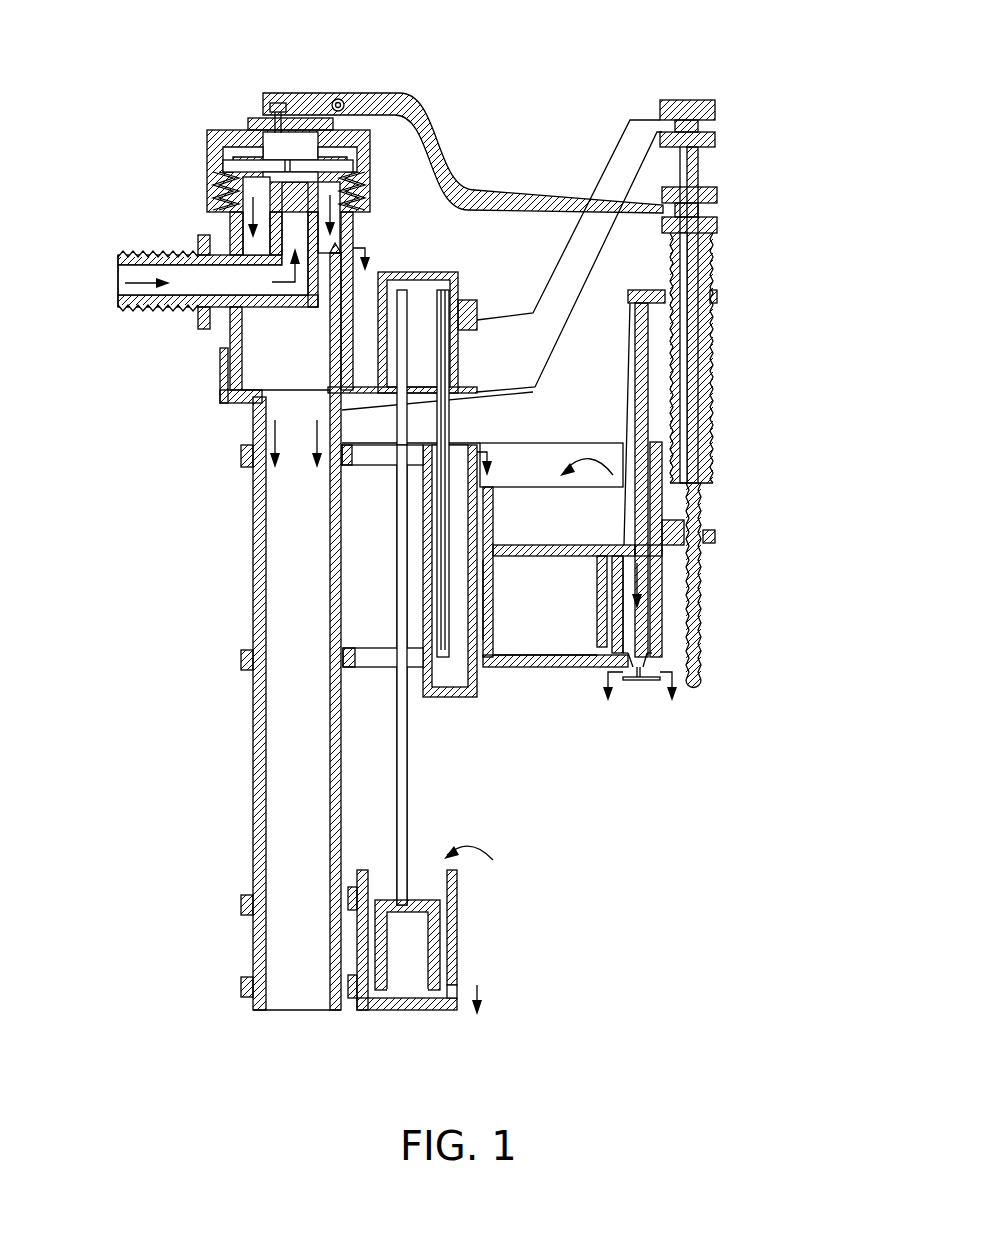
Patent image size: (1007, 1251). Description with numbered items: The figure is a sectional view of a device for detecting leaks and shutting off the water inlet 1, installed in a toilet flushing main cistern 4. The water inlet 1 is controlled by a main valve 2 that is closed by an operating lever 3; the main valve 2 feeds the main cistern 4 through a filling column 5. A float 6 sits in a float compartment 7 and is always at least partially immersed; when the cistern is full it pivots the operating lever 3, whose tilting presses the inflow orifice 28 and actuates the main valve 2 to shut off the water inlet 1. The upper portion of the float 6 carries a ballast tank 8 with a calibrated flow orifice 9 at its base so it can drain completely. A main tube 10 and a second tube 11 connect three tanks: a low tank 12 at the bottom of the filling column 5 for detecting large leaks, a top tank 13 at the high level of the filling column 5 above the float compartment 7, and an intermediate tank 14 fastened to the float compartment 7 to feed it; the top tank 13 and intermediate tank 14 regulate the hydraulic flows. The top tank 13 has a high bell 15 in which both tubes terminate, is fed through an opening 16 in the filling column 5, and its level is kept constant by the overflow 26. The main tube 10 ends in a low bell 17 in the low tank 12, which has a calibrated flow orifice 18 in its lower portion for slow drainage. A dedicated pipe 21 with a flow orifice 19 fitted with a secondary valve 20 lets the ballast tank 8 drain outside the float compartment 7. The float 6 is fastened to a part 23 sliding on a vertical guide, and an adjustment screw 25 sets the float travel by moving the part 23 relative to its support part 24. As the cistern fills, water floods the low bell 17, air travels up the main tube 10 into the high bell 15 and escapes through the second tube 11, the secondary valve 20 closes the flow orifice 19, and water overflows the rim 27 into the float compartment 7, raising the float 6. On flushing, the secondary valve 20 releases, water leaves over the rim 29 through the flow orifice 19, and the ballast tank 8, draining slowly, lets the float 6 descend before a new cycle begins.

The water inlet 1 is at (116, 298).
The main valve 2 is at (225, 165).
The operating lever 3 is at (410, 105).
The flushing main cistern 4 is at (180, 715).
The filling column 5 is at (258, 578).
The float 6 is at (567, 630).
The float compartment 7 is at (548, 662).
The ballast tank 8 is at (592, 518).
The calibrated flow orifice 9 is at (640, 548).
The main tube 10 is at (405, 790).
The second tube 11 is at (445, 657).
The low tank 12 is at (455, 890).
The top tank 13 is at (477, 310).
The intermediate tank 14 is at (470, 690).
The high bell 15 is at (415, 272).
The opening 16 is at (336, 247).
The low bell 17 is at (430, 940).
The calibrated flow orifice 18 is at (457, 991).
The flow orifice 19 is at (655, 660).
The secondary valve 20 is at (640, 682).
The dedicated pipe 21 is at (645, 618).
The part 23 is at (718, 297).
The support part 24 is at (676, 272).
The adjustment screw 25 is at (700, 105).
The overflow 26 is at (358, 330).
The rim 27 is at (537, 443).
The inflow orifice 28 is at (268, 112).
The rim 29 is at (492, 585).